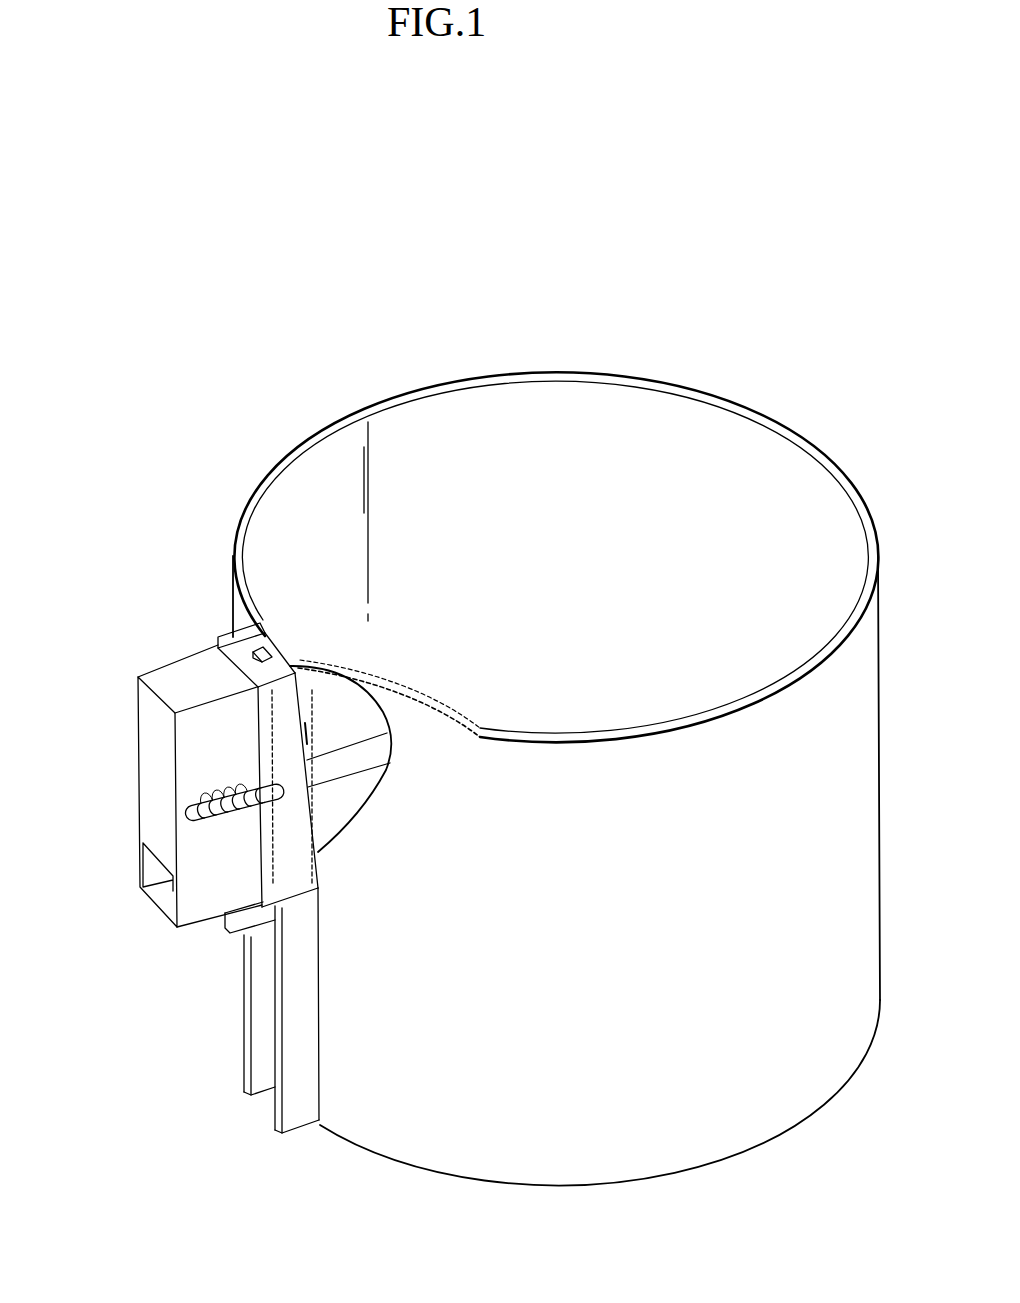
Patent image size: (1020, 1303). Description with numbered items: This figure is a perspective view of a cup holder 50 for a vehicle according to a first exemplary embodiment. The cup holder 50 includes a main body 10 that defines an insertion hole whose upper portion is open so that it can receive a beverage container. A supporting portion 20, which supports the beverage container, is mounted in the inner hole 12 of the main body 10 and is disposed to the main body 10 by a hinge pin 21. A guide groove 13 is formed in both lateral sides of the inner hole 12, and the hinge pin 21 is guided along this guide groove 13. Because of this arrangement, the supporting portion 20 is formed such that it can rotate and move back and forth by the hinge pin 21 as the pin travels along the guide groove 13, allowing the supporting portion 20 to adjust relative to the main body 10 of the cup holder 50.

The cup holder 50 is at (694, 355).
The main body 10 is at (232, 541).
The inner hole 12 is at (193, 756).
The guide groove 13 is at (196, 815).
The supporting portion 20 is at (386, 750).
The hinge pin 21 is at (277, 796).